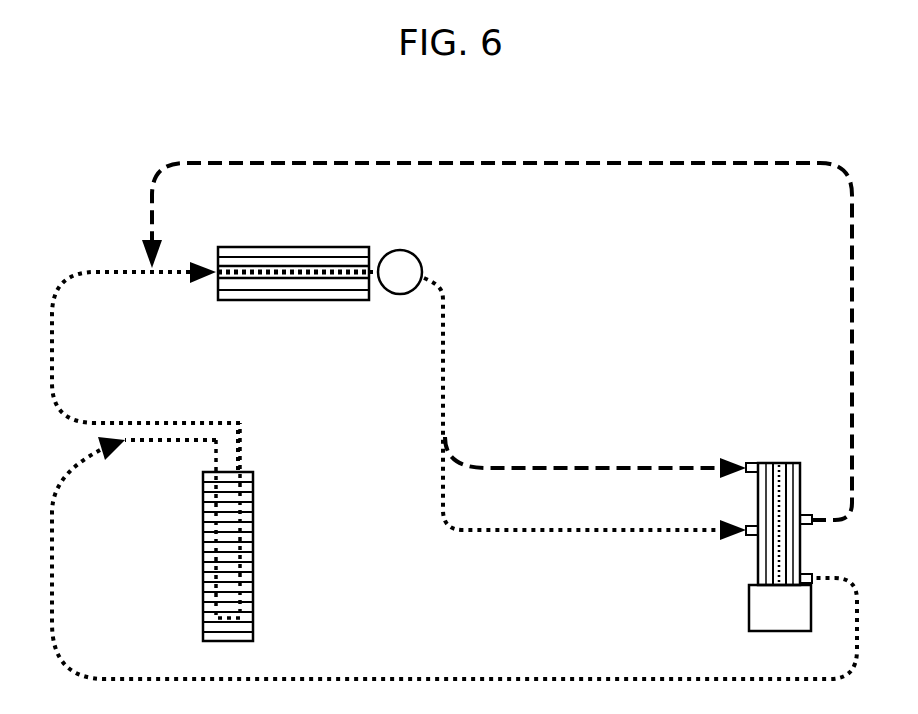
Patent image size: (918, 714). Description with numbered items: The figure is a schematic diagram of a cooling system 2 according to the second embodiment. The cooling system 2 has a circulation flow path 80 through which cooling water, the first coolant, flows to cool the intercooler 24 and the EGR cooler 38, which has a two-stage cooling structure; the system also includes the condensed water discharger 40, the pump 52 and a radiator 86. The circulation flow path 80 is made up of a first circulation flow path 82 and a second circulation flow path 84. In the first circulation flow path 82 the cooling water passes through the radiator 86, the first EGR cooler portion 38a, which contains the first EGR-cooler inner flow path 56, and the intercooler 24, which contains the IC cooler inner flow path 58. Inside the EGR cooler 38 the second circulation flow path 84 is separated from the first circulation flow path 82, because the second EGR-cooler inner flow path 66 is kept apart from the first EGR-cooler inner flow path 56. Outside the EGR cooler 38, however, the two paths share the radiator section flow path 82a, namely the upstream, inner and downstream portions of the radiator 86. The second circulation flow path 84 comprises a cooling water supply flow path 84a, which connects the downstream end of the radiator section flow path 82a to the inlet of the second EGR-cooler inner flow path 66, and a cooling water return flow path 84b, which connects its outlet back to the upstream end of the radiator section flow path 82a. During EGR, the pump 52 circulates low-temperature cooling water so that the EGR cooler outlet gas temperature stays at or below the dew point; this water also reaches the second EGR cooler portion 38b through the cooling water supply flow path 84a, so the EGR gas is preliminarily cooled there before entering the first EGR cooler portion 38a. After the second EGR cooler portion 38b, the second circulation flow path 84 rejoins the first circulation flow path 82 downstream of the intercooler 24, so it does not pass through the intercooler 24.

The cooling system 2 is at (762, 130).
The intercooler 24 is at (250, 472).
The EGR cooler 38 is at (781, 453).
The first EGR cooler portion 38a is at (758, 563).
The second EGR cooler portion 38b is at (758, 505).
The condensed water discharger 40 is at (750, 601).
The pump 52 is at (396, 250).
The first EGR-cooler inner flow path 56 is at (787, 548).
The IC cooler inner flow path 58 is at (215, 512).
The second EGR-cooler inner flow path 66 is at (787, 479).
The circulation flow path 80 is at (647, 367).
The first circulation flow path 82 is at (501, 517).
The radiator section flow path 82a is at (443, 356).
The second circulation flow path 84 is at (593, 457).
The cooling water supply flow path 84a is at (660, 467).
The cooling water return flow path 84b is at (600, 163).
The radiator 86 is at (264, 247).